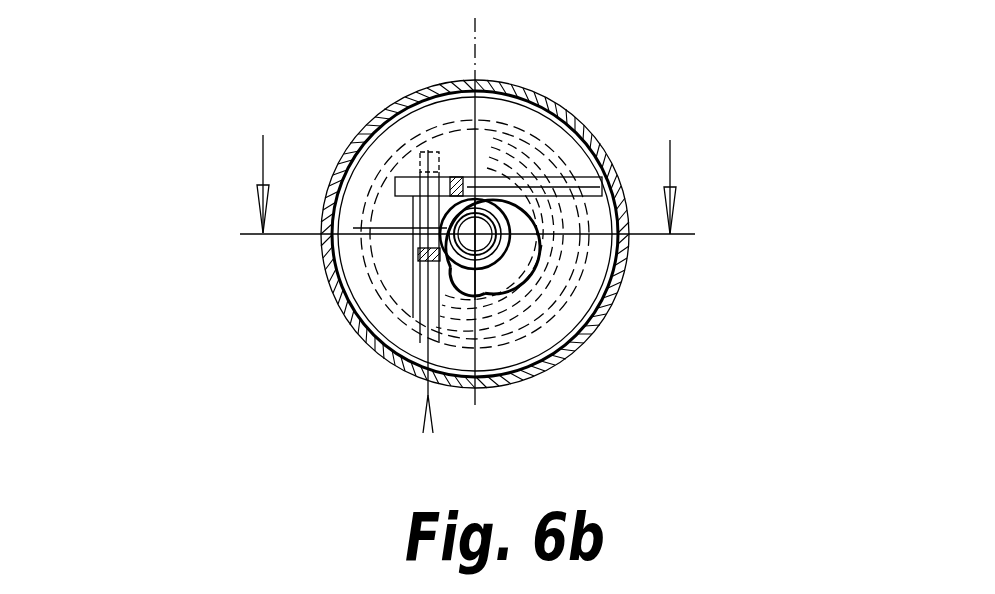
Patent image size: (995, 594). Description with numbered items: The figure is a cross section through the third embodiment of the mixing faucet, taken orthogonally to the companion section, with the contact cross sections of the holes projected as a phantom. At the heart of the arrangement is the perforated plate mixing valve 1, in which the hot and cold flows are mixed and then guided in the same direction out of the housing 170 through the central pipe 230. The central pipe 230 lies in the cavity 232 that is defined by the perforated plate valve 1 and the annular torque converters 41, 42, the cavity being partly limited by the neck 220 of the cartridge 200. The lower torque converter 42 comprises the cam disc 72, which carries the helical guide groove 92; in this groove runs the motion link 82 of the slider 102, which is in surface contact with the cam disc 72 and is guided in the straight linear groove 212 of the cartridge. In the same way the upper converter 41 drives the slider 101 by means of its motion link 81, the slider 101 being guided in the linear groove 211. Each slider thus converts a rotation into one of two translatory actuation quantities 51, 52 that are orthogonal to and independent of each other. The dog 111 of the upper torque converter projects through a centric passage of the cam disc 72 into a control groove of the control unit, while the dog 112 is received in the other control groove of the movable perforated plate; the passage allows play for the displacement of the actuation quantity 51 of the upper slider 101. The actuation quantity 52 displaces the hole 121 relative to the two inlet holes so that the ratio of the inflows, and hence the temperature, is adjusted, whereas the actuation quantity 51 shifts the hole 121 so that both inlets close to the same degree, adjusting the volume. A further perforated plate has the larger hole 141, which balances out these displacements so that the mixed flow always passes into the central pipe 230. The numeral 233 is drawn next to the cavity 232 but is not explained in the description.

The perforated plate mixing valve 1 is at (582, 348).
The cartridge 200 is at (353, 195).
The slider 102 is at (410, 163).
The torque converter 41 is at (383, 128).
The linear groove 212 is at (612, 202).
The neck 220 is at (422, 305).
The torque converter 42 is at (560, 172).
The motion link 82 is at (602, 178).
The actuation quantity 52 is at (602, 190).
The motion link 81 is at (432, 176).
The linear groove 211 is at (413, 240).
The housing 170 is at (413, 242).
The dog 111 is at (418, 256).
The helical guide groove 92 is at (417, 290).
The actuation quantity 51 is at (428, 395).
The cam disc 72 is at (358, 207).
The slider 101 is at (356, 216).
The dog 112 is at (468, 243).
The cavity 232 is at (471, 238).
The shaft bore 233 is at (603, 146).
The central pipe 230 is at (528, 262).
The hole 141 is at (516, 284).
The control groove 121 is at (513, 362).